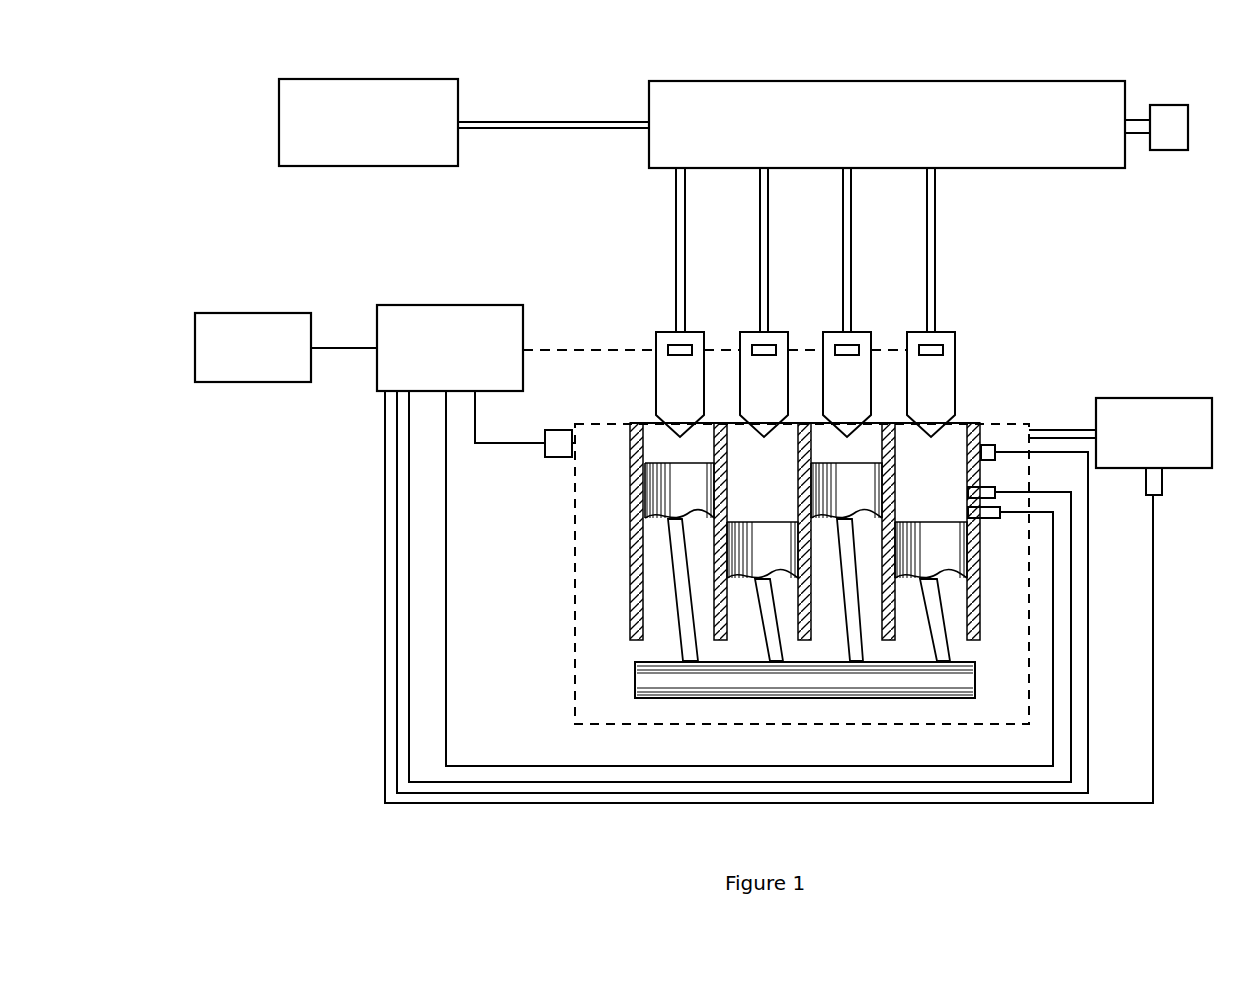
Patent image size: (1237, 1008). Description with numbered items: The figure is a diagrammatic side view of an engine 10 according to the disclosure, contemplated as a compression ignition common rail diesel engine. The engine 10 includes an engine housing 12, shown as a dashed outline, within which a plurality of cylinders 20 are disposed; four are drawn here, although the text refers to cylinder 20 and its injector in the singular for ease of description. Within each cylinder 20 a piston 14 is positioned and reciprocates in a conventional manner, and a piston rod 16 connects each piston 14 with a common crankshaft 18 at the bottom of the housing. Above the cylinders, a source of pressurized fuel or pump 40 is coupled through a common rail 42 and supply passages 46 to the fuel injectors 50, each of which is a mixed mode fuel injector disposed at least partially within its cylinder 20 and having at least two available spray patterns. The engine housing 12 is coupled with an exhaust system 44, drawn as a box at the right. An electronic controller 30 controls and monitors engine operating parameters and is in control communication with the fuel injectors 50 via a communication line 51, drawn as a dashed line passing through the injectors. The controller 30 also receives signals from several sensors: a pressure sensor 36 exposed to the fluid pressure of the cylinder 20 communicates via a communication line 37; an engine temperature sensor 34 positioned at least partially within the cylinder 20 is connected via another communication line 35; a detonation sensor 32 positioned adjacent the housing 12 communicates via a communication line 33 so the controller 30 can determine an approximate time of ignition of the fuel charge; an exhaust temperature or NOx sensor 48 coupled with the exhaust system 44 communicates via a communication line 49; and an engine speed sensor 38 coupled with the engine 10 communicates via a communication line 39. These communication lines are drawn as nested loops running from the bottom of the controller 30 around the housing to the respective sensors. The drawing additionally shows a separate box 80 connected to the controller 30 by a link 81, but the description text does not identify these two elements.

The engine 10 is at (268, 472).
The engine housing 12 is at (573, 597).
The piston 14 is at (945, 567).
The piston rod 16 is at (950, 648).
The crankshaft 18 is at (965, 686).
The cylinder 20 is at (940, 456).
The electronic controller 30 is at (505, 357).
The detonation sensor 32 is at (988, 447).
The communication line 33 is at (1088, 500).
The engine temperature sensor 34 is at (988, 489).
The communication line 35 is at (1038, 492).
The pressure sensor 36 is at (991, 520).
The communication line 37 is at (980, 766).
The engine speed sensor 38 is at (548, 440).
The communication line 39 is at (528, 446).
The pump 40 is at (435, 151).
The common rail 42 is at (1102, 155).
The exhaust system 44 is at (1170, 398).
The supply passages 46 is at (936, 298).
The exhaust sensor 48 is at (1163, 495).
The communication line 49 is at (1158, 555).
The fuel injector 50 is at (937, 374).
The communication line 51 is at (543, 348).
The auxiliary device 80 is at (237, 313).
The communication link 81 is at (323, 347).